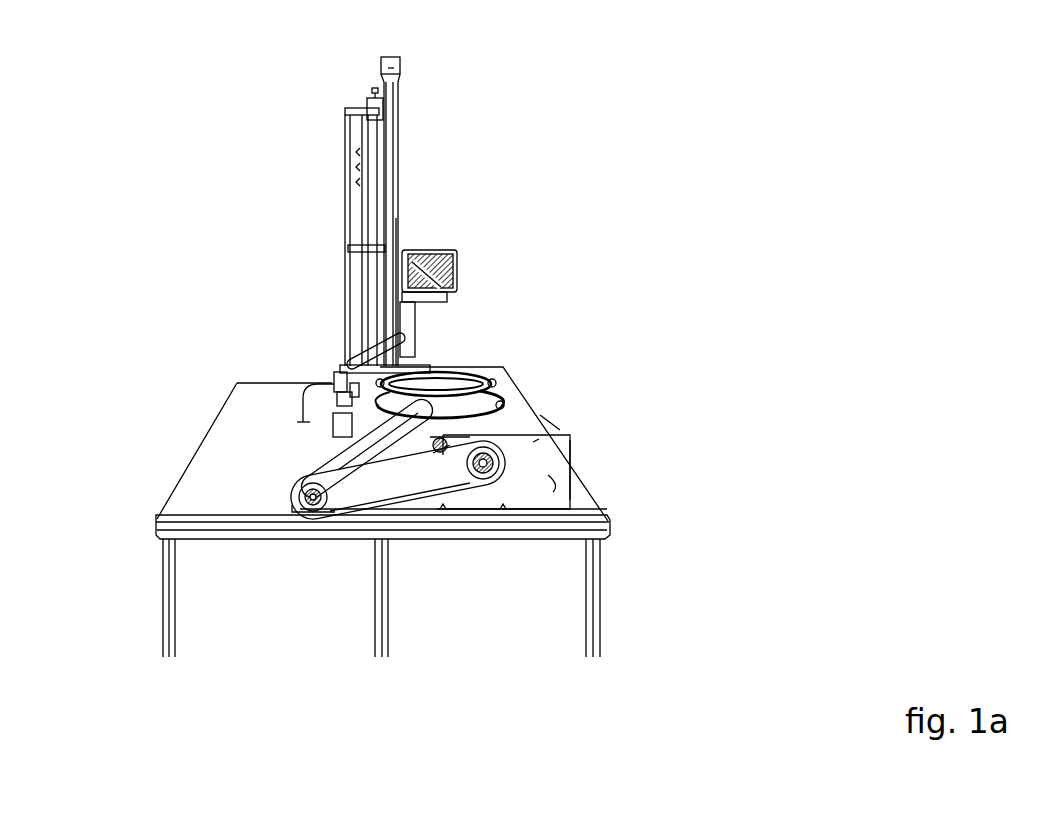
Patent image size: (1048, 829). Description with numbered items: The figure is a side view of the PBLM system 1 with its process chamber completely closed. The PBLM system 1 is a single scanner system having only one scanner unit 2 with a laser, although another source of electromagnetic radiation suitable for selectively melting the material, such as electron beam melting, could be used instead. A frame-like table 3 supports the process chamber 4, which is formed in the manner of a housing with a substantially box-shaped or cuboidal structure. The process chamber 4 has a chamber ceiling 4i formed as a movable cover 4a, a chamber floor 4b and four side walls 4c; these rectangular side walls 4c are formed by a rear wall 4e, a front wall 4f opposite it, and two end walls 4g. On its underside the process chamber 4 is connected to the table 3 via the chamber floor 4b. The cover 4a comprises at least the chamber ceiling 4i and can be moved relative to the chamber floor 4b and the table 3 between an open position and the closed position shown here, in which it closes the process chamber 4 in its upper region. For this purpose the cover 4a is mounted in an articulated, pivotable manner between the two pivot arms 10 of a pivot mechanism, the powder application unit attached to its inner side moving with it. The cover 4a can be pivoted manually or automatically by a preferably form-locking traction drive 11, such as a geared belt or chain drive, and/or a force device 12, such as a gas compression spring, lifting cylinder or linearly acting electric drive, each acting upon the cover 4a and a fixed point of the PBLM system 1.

The PBLM system 1 is at (648, 203).
The scanner unit 2 is at (433, 228).
The table 3 is at (193, 488).
The process chamber 4 is at (572, 353).
The cover 4a is at (546, 409).
The chamber floor 4b is at (565, 508).
The side walls 4c is at (486, 494).
The rear wall 4e is at (314, 433).
The front wall 4f is at (576, 453).
The end walls 4g is at (570, 466).
The chamber ceiling 4i is at (558, 422).
The pivot arms 10 is at (410, 478).
The traction drive 11 is at (488, 428).
The force device 12 is at (358, 492).